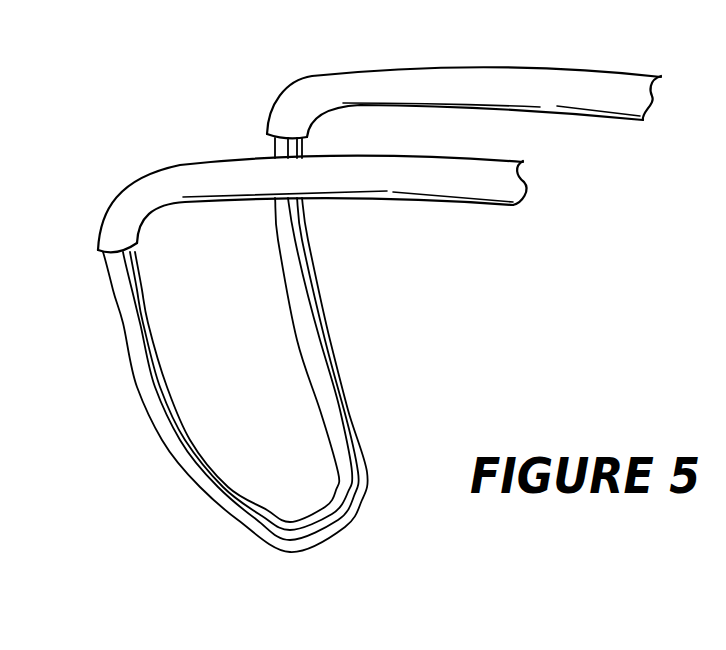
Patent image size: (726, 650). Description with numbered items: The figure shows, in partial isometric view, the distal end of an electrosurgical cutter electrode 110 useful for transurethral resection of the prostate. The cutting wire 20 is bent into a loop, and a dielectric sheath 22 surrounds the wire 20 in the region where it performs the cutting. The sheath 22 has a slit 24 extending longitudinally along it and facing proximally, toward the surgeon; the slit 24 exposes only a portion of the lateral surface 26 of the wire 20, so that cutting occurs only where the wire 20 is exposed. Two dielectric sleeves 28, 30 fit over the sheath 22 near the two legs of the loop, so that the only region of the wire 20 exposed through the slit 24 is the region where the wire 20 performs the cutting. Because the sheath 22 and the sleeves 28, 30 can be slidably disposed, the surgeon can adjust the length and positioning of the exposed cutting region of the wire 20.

The wire 20 is at (200, 488).
The dielectric sheath 22 is at (180, 529).
The slit 24 is at (303, 267).
The lateral surface 26 is at (318, 338).
The dielectric sleeve 28 is at (298, 97).
The dielectric sleeve 30 is at (100, 216).
The electrosurgical cutter electrode 110 is at (438, 352).